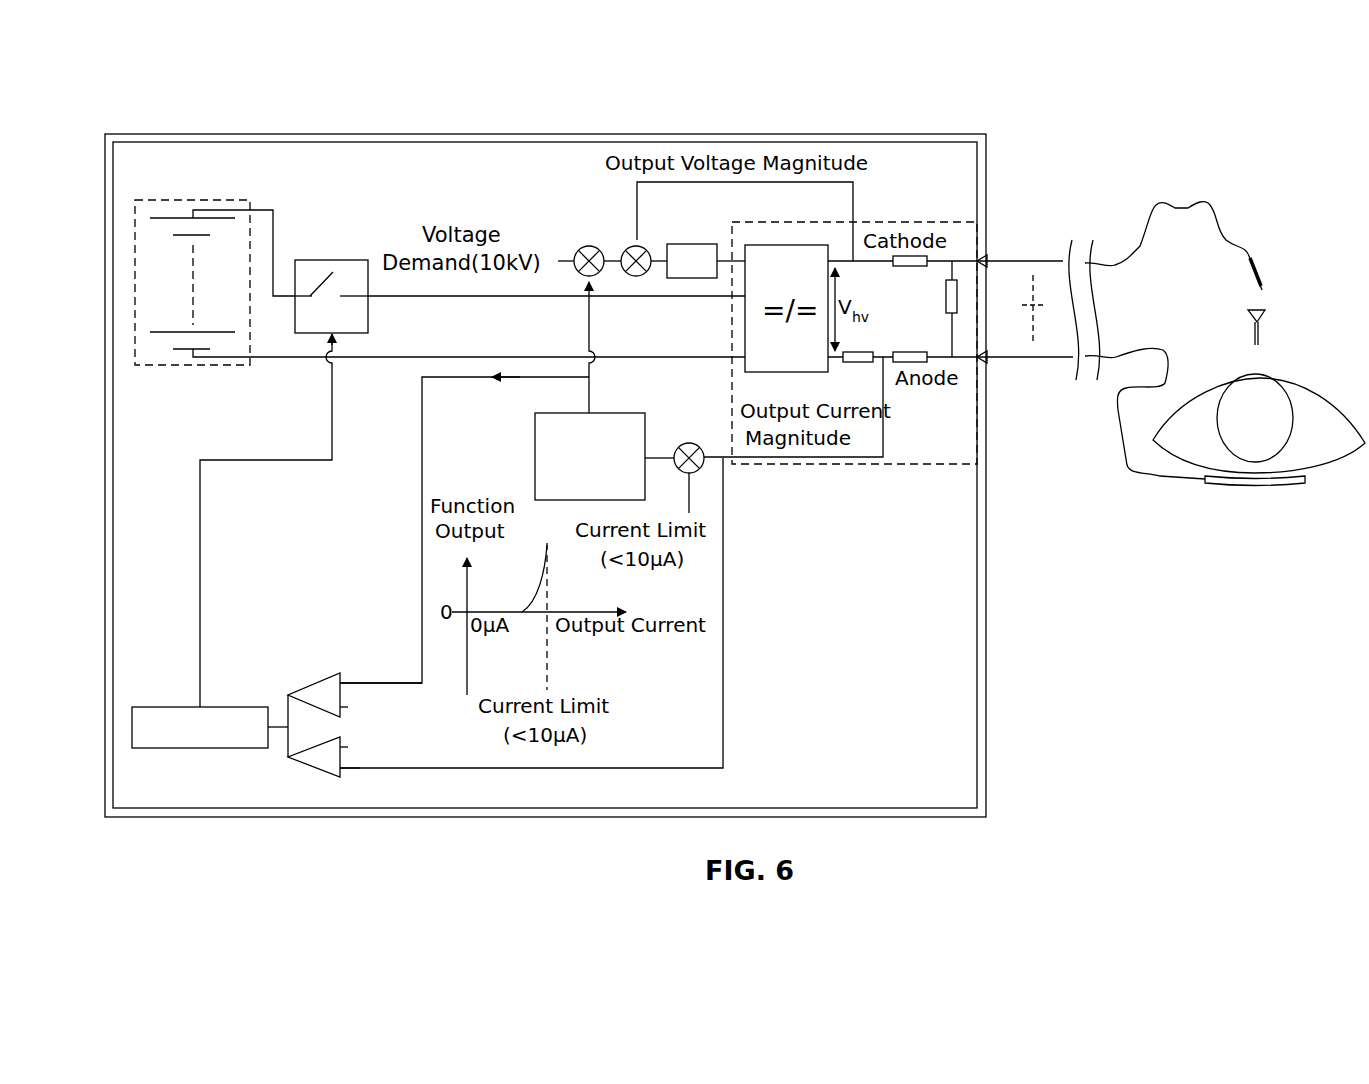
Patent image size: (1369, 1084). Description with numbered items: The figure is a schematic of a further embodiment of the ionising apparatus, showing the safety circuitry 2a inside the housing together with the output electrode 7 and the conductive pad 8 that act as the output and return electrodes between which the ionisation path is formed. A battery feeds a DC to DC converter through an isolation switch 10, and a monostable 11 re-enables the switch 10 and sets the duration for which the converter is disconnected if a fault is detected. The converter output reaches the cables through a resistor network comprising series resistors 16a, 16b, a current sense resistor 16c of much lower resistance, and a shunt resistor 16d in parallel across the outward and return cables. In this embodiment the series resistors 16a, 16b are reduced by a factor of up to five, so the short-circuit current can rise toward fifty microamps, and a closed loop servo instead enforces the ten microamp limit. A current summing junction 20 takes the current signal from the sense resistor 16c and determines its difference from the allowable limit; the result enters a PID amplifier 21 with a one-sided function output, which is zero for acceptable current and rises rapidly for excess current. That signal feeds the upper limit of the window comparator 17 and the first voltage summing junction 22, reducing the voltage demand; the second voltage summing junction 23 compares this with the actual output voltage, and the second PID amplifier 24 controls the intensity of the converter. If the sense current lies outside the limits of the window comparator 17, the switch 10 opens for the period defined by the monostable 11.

The safety circuitry 2a is at (808, 600).
The output electrode 7 is at (1262, 292).
The electrically conductive pad 8 is at (1255, 486).
The isolation switch 10 is at (330, 260).
The monostable 11 is at (235, 707).
The series resistor 16a is at (928, 260).
The series resistor 16b is at (912, 350).
The current sense resistor 16c is at (862, 363).
The shunt resistor 16d is at (958, 302).
The window comparator 17 is at (330, 725).
The current summing junction 20 is at (705, 466).
The PID amplifier 21 is at (563, 412).
The first voltage summing junction 22 is at (584, 246).
The second voltage summing junction 23 is at (645, 247).
The second PID amplifier 24 is at (692, 244).